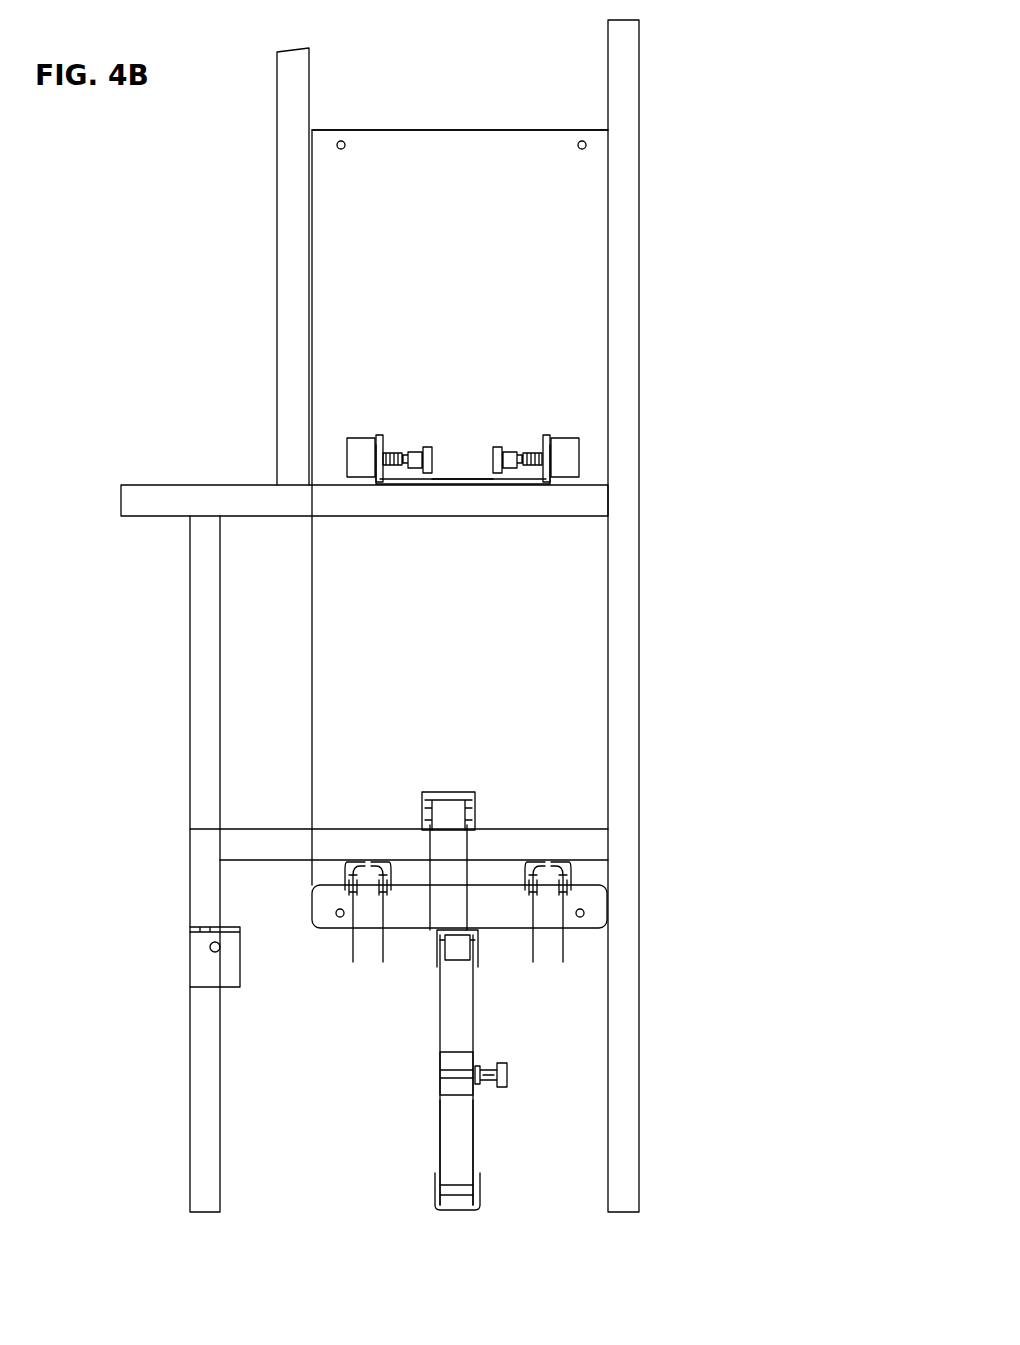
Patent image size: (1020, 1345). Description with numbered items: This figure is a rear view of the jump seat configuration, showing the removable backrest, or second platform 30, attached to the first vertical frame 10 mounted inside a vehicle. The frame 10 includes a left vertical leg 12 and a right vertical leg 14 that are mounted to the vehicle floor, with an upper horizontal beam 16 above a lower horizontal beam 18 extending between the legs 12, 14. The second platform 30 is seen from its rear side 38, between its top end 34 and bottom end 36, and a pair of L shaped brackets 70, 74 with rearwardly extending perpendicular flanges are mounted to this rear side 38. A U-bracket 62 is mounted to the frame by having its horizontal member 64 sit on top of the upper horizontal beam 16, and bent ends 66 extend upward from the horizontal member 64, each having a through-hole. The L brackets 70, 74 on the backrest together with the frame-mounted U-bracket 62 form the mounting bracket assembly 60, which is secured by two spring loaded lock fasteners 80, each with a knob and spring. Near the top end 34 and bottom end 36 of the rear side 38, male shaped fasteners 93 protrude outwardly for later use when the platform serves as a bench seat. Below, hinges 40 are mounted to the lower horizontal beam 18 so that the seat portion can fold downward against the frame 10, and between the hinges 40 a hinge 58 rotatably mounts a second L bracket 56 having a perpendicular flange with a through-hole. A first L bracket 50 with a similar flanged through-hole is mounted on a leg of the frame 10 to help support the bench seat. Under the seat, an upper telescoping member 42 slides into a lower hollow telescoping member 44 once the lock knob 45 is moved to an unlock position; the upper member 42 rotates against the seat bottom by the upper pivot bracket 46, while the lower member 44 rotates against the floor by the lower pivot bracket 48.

The first vertical frame 10 is at (252, 186).
The left vertical leg 12 is at (633, 648).
The right vertical leg 14 is at (197, 665).
The upper horizontal beam 16 is at (247, 497).
The lower horizontal beam 18 is at (240, 838).
The second platform 30 is at (521, 469).
The top end 34 is at (355, 130).
The bottom end 36 is at (492, 887).
The rear side 38 is at (565, 200).
The hinges for jump seat 40 is at (588, 870).
The upper telescoping member 42 is at (452, 1028).
The lower telescoping member 44 is at (450, 1143).
The lock knob 45 is at (509, 1077).
The upper pivot bracket 46 is at (437, 945).
The lower pivot bracket 48 is at (480, 1205).
The first L bracket 50 is at (200, 952).
The second L bracket 56 is at (455, 855).
The hinge for second L bracket 58 is at (468, 800).
The mounting bracket assembly 60 is at (461, 294).
The U-bracket 62 is at (461, 474).
The horizontal member 64 is at (432, 486).
The bent ends 66 is at (375, 483).
The first L bracket with perpendicular flange 70 is at (700, 418).
The second L bracket with perpendicular flange 74 is at (362, 445).
The spring loaded lock fasteners 80 is at (508, 435).
The fastener for bench edge 93 is at (578, 148).